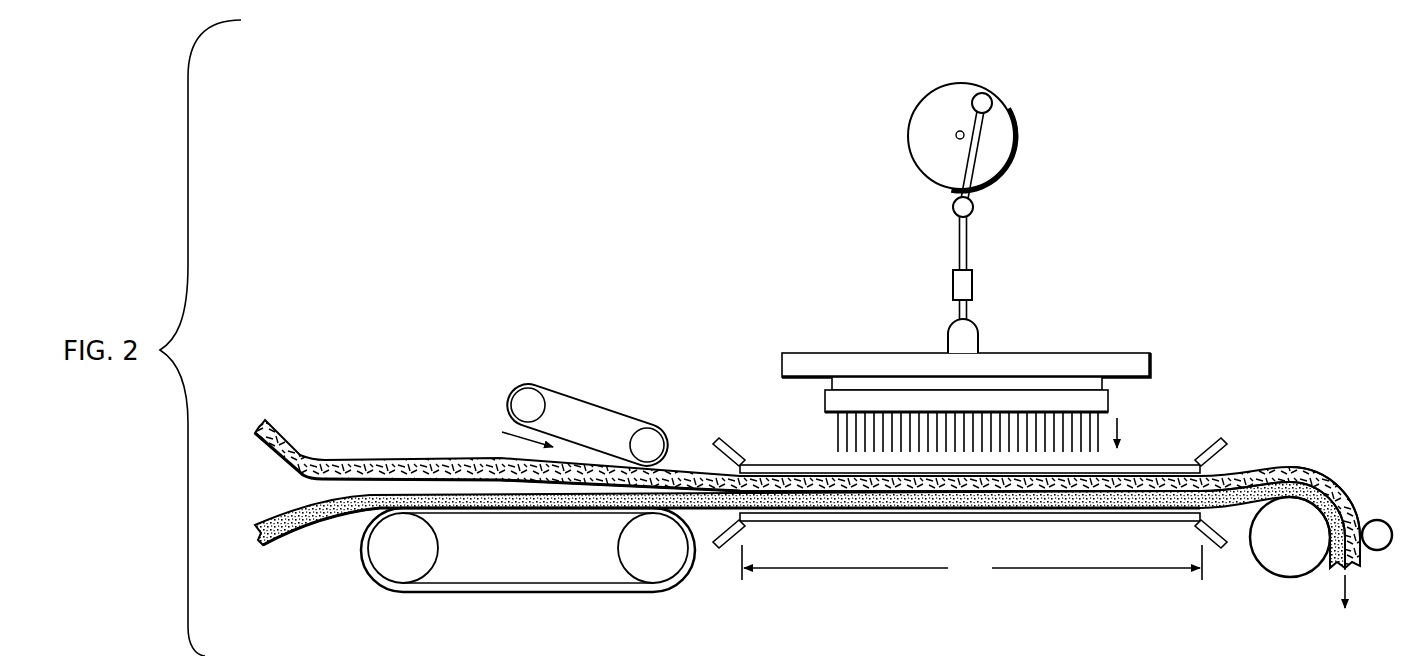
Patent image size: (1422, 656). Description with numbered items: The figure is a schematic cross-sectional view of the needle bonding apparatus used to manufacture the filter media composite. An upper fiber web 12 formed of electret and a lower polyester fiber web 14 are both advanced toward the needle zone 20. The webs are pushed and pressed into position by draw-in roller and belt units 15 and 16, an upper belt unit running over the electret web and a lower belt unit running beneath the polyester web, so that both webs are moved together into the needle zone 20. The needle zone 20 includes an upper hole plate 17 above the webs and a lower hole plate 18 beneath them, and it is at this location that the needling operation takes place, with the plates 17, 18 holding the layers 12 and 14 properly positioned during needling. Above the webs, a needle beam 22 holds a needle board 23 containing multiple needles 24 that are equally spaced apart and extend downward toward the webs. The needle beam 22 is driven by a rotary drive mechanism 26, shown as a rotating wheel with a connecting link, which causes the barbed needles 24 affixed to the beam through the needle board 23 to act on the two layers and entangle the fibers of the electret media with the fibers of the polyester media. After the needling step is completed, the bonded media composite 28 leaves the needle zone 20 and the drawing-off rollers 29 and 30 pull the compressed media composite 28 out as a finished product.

The upper fiber web 12 is at (405, 457).
The lower polyester fiber web 14 is at (298, 522).
The draw-in roller and belt unit 15 is at (584, 402).
The draw-in roller and belt unit 16 is at (680, 586).
The upper hole plate 17 is at (757, 465).
The lower hole plate 18 is at (745, 521).
The needle zone 20 is at (972, 563).
The needle beam 22 is at (810, 355).
The needle board 23 is at (1110, 400).
The needles 24 is at (829, 423).
The rotary drive mechanism 26 is at (1000, 172).
The media composite 28 is at (1305, 468).
The drawing-off roller 29 is at (1380, 521).
The drawing-off roller 30 is at (1288, 570).